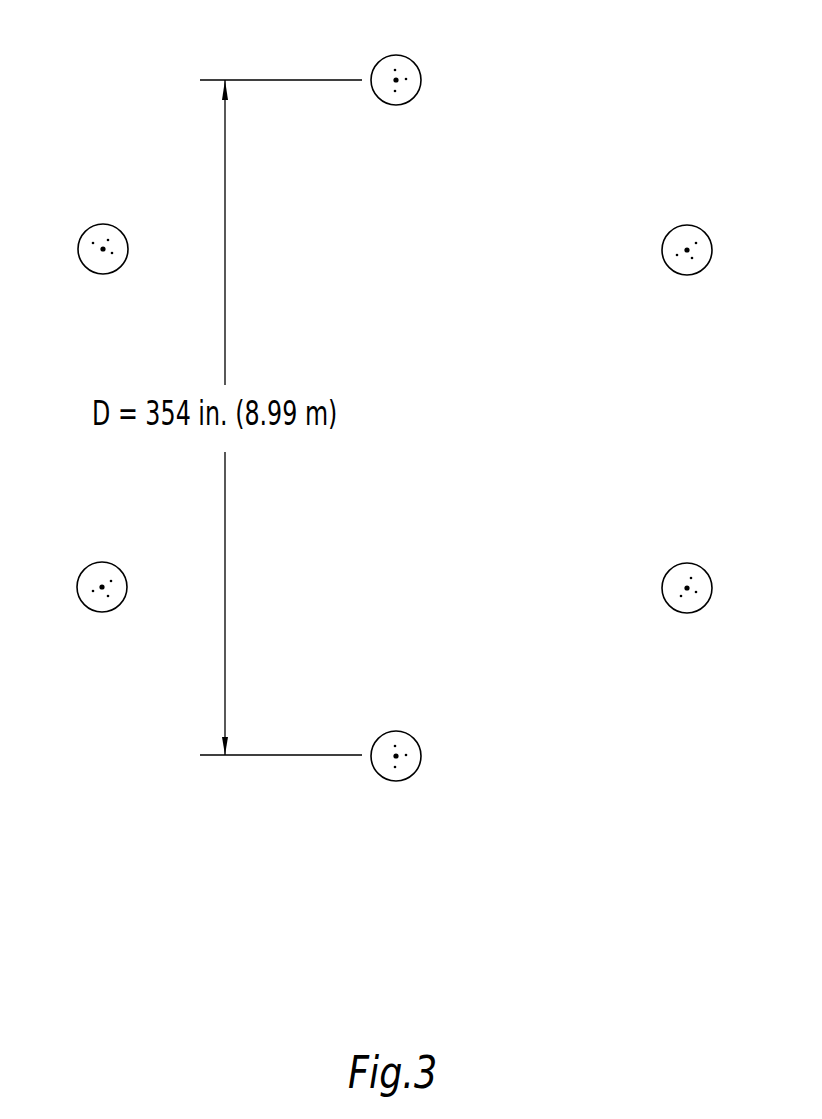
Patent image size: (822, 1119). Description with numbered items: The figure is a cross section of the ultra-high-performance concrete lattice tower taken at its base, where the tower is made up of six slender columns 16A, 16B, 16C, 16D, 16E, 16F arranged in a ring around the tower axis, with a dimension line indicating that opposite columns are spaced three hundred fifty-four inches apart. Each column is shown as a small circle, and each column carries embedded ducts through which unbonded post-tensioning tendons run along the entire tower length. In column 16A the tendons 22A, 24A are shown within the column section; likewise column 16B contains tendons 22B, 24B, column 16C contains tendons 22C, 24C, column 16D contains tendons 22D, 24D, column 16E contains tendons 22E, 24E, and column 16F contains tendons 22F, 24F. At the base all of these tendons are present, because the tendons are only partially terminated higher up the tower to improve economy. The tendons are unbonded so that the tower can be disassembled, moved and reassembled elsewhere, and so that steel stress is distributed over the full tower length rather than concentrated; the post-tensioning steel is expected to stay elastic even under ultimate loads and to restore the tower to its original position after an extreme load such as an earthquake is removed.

The column 16A is at (398, 60).
The post-tensioning tendon 24A is at (385, 80).
The post-tensioning tendon 22A is at (396, 80).
The column 16B is at (706, 235).
The post-tensioning tendon 24B is at (683, 243).
The post-tensioning tendon 22B is at (687, 250).
The column 16C is at (706, 572).
The post-tensioning tendon 24C is at (680, 582).
The post-tensioning tendon 22C is at (687, 588).
The column 16D is at (408, 740).
The post-tensioning tendon 24D is at (385, 757).
The post-tensioning tendon 22D is at (396, 756).
The column 16E is at (110, 568).
The post-tensioning tendon 24E is at (97, 578).
The post-tensioning tendon 22E is at (102, 587).
The column 16F is at (97, 228).
The post-tensioning tendon 24F is at (97, 258).
The post-tensioning tendon 22F is at (103, 249).